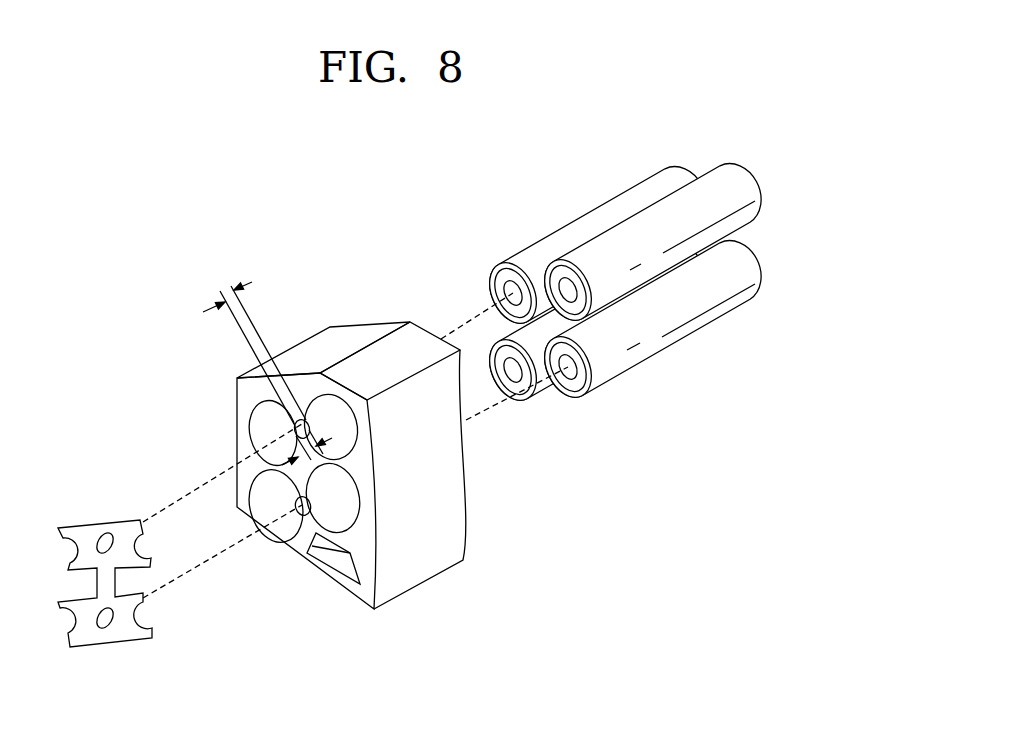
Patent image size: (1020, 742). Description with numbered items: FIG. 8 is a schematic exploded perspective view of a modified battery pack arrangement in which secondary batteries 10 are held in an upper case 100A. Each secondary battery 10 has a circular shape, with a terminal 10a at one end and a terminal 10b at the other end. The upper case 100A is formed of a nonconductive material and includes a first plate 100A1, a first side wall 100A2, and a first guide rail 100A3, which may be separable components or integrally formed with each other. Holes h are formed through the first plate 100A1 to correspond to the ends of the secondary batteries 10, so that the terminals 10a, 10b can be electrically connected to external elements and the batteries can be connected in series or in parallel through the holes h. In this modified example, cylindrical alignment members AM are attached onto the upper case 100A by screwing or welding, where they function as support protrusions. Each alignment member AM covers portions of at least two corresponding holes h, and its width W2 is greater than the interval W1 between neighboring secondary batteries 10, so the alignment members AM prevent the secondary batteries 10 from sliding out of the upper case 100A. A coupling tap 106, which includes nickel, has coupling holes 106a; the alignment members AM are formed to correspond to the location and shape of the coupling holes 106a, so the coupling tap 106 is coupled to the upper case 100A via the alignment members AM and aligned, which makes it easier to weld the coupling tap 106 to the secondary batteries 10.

The secondary battery 10 is at (607, 272).
The terminal 10a is at (510, 297).
The terminal 10b is at (690, 176).
The upper case 100A is at (308, 458).
The first plate 100A1 is at (240, 395).
The first side wall 100A2 is at (353, 336).
The first guide rail 100A3 is at (250, 342).
The alignment member AM is at (294, 427).
The interval W1 is at (227, 288).
The width of alignment member W2 is at (313, 440).
The hole h is at (283, 526).
The coupling tap 106 is at (106, 607).
The coupling hole 106a is at (104, 632).